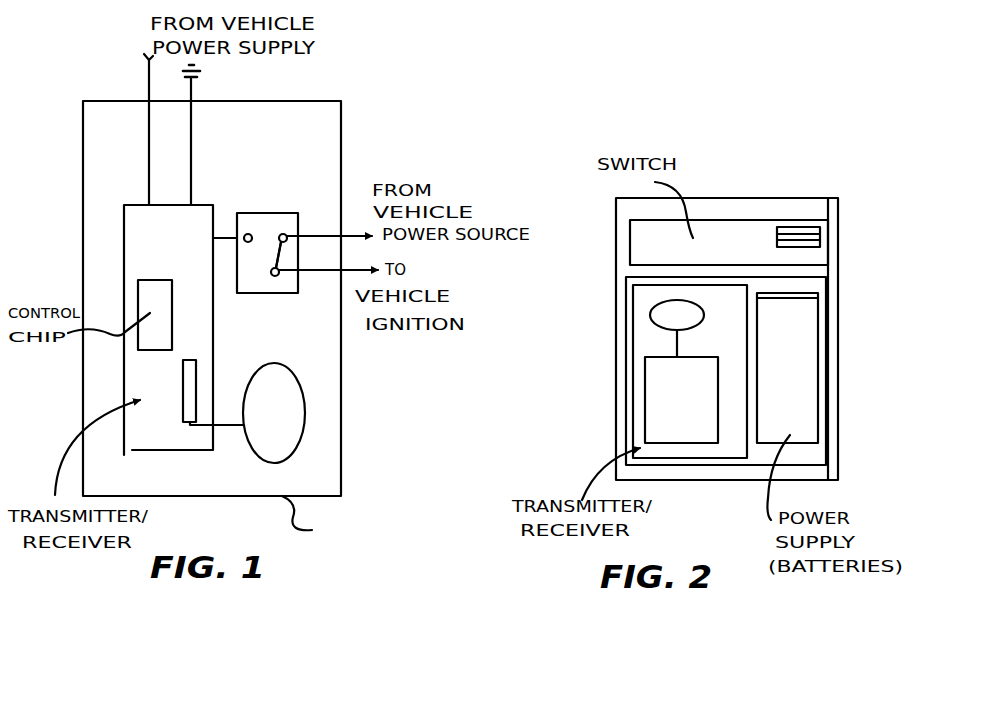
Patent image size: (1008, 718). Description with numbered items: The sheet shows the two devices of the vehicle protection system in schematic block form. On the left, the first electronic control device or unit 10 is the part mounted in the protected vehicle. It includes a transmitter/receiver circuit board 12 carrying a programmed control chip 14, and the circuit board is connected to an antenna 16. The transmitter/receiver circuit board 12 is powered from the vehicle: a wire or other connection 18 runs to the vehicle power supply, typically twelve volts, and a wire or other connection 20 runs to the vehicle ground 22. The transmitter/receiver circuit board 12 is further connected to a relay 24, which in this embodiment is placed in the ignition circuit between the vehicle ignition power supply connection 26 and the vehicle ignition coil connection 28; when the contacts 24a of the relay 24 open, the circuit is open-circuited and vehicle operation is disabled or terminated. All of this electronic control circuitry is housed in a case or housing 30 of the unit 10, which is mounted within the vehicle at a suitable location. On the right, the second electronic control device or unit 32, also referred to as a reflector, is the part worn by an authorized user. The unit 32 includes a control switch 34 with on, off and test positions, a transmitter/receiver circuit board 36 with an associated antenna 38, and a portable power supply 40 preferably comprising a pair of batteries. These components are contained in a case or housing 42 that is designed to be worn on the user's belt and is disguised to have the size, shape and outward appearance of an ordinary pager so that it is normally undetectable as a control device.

In FIG. 1, the first electronic control device or unit 10 is at (352, 393).
In FIG. 1, the transmitter/receiver circuit board 12 is at (198, 330).
In FIG. 1, the programmed control chip 14 is at (152, 294).
In FIG. 1, the antenna 16 is at (290, 435).
In FIG. 1, the wire or other connection 18 is at (148, 156).
In FIG. 1, the wire or other connection 20 is at (193, 160).
In FIG. 1, the vehicle ground 22 is at (196, 72).
In FIG. 1, the relay 24 is at (262, 212).
In FIG. 1, the contacts 24a is at (265, 236).
In FIG. 1, the vehicle ignition power supply connection 26 is at (298, 282).
In FIG. 1, the vehicle ignition coil connection 28 is at (305, 234).
In FIG. 1, the case or housing 30 is at (314, 523).
In FIG. 2, the second electronic control device or unit 32 is at (702, 194).
In FIG. 2, the control switch 34 is at (818, 220).
In FIG. 2, the transmitter/receiver circuit board 36 is at (680, 452).
In FIG. 2, the antenna 38 is at (650, 313).
In FIG. 2, the portable power supply 40 is at (796, 371).
In FIG. 2, the case or housing 42 is at (618, 398).